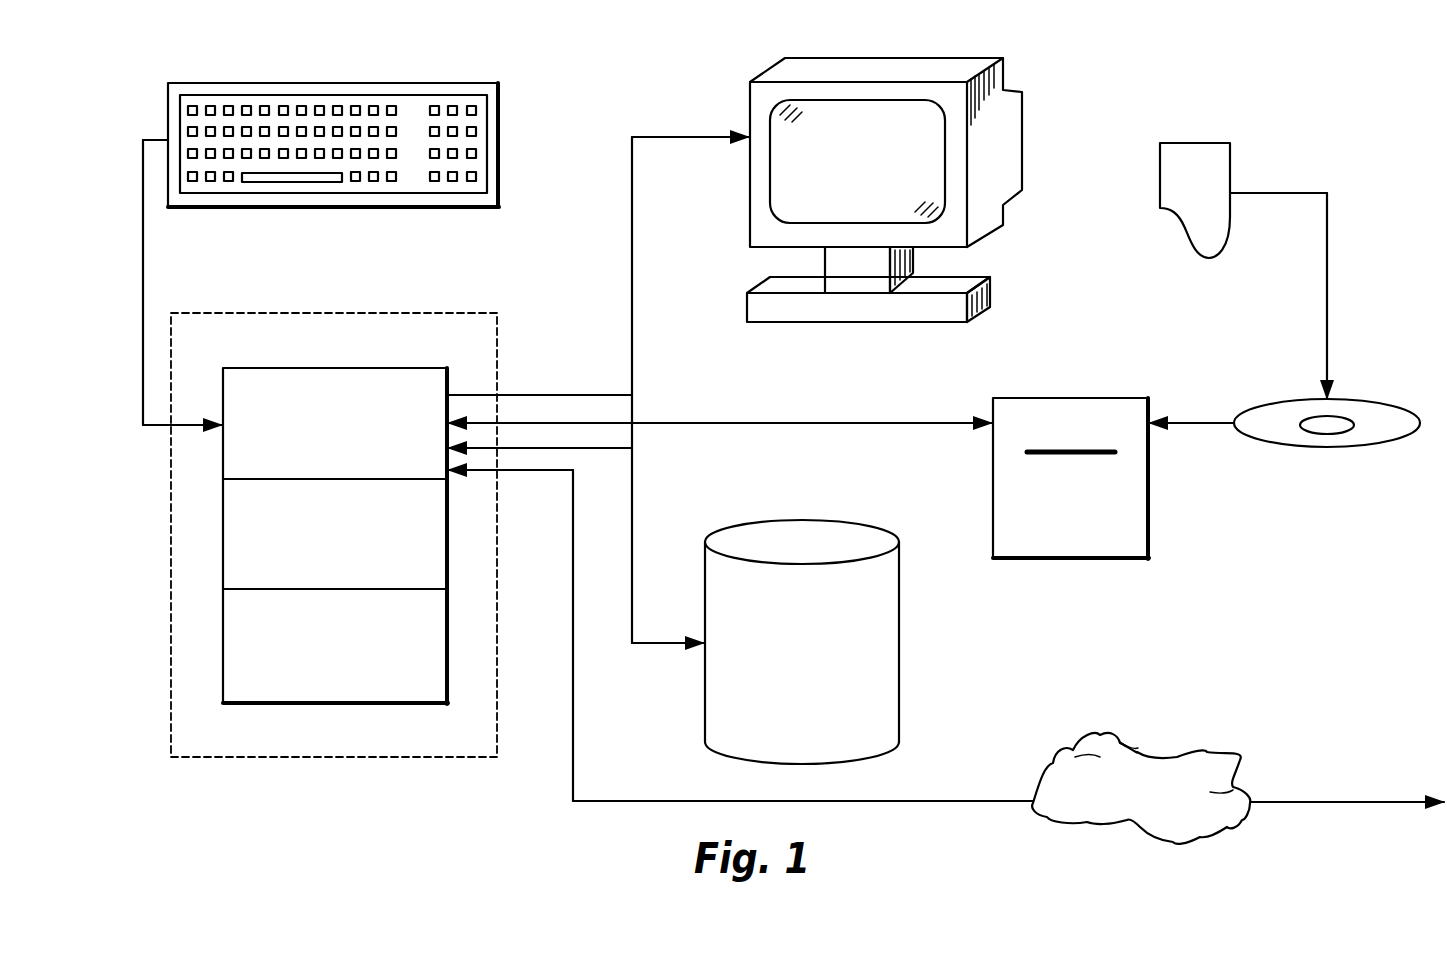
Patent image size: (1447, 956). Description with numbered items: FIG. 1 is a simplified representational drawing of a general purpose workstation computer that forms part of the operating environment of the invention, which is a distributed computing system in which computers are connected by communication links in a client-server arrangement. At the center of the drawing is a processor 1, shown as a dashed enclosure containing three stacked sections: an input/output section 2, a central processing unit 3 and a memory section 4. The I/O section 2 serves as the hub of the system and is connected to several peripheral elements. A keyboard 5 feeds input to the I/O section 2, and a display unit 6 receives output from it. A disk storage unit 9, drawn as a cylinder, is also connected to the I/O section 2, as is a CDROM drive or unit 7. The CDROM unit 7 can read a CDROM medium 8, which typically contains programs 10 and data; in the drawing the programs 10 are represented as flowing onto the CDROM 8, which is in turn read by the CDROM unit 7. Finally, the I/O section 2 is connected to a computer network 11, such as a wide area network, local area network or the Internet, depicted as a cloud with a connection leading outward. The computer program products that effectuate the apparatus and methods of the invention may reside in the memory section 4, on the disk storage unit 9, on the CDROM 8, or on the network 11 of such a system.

The processor 1 is at (447, 312).
The input/output section 2 is at (312, 373).
The central processing unit 3 is at (447, 550).
The memory section 4 is at (447, 688).
The keyboard 5 is at (473, 85).
The display unit 6 is at (953, 67).
The CDROM drive or unit 7 is at (1022, 398).
The CDROM medium 8 is at (1302, 403).
The disk storage unit 9 is at (895, 617).
The programs 10 is at (1175, 152).
The computer network 11 is at (1108, 743).